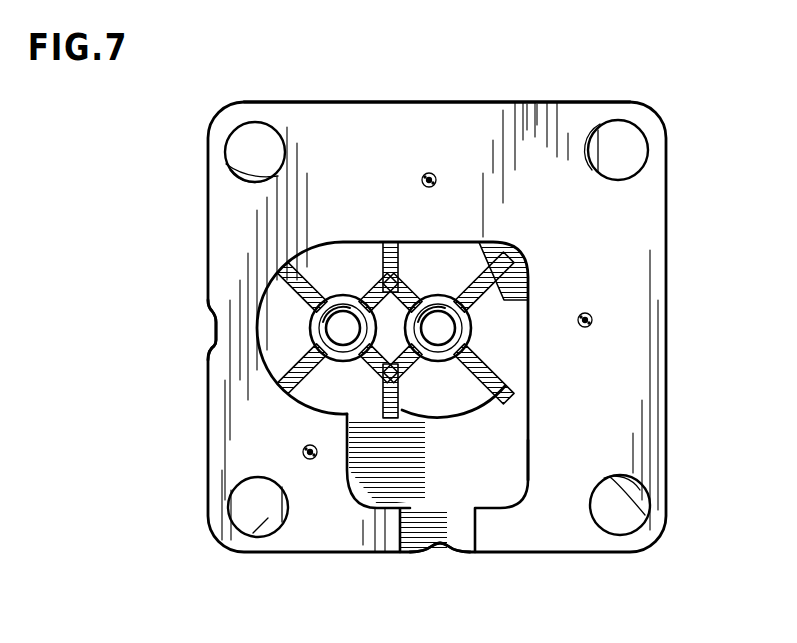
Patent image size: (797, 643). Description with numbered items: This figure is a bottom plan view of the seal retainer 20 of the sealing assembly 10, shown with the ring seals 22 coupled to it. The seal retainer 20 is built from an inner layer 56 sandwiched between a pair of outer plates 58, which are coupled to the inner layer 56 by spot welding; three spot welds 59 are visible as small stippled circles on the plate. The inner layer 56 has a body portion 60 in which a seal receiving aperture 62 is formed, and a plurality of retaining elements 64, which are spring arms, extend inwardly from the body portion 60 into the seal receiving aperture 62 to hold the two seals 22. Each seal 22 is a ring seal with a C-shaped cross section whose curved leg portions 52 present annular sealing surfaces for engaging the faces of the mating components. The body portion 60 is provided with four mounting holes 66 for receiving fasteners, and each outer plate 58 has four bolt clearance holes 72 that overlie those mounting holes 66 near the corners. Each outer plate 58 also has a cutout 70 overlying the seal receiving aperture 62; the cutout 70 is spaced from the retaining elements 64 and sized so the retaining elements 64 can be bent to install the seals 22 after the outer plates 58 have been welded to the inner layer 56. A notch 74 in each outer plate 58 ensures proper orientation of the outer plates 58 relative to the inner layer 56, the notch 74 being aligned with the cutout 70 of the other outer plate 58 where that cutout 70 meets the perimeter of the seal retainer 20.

The sealing assembly 10 is at (193, 114).
The seal retainer 20 is at (513, 102).
The seals 22 is at (470, 237).
The curved leg portions 52 is at (337, 302).
The inner layer 56 is at (491, 476).
The outer plates 58 is at (620, 252).
The spot welds 59 is at (428, 172).
The body portion 60 is at (422, 478).
The seal receiving aperture 62 is at (432, 408).
The retaining elements 64 is at (418, 262).
The mounting holes 66 is at (618, 147).
The cutout 70 is at (528, 423).
The bolt clearance holes 72 is at (274, 133).
The notch 74 is at (212, 330).